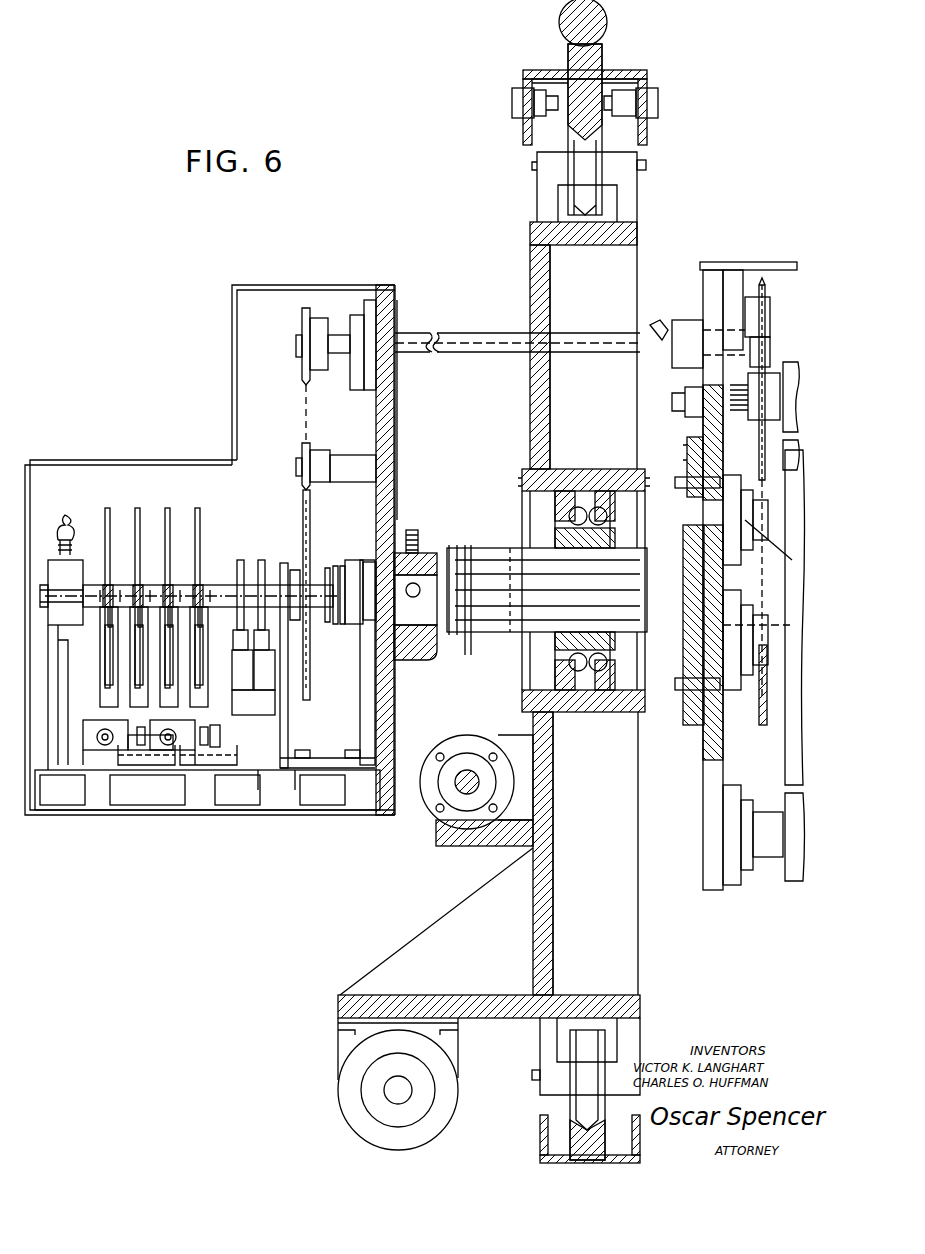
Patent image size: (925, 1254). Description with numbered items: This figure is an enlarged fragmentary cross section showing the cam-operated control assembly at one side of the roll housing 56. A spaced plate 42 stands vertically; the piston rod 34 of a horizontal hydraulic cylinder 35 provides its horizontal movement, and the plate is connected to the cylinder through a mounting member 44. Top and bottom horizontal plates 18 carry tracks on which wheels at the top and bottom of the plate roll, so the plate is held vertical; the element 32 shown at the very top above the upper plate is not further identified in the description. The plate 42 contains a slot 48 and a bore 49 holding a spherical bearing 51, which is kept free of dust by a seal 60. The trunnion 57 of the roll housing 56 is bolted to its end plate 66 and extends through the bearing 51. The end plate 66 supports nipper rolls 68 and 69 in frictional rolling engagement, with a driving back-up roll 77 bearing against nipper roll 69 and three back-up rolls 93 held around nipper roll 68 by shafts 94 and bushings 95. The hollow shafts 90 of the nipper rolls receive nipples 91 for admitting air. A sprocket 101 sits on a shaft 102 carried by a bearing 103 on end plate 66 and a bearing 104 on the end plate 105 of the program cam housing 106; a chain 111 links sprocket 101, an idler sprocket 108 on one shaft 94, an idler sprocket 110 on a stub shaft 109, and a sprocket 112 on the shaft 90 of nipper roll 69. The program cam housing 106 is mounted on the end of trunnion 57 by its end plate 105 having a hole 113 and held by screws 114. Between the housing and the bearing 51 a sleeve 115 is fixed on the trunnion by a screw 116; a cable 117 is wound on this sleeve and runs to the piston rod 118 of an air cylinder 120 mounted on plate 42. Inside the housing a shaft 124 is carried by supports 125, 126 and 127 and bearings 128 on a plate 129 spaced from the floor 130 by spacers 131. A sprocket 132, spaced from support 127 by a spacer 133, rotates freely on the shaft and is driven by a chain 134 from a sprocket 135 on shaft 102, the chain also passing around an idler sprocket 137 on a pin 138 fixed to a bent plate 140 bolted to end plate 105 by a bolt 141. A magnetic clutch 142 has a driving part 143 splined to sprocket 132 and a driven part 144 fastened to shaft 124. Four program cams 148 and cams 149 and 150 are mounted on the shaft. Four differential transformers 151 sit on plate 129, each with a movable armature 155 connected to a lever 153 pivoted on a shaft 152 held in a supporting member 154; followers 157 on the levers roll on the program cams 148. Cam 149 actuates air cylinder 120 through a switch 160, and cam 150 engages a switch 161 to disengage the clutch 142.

The top horizontal plate 18 is at (630, 72).
The ball 32 is at (607, 22).
The piston rod 34 is at (405, 1090).
The horizontal hydraulic cylinder 35 is at (443, 1105).
The spaced plate 42 is at (533, 258).
The mounting member 44 is at (458, 1043).
The slot 48 is at (548, 380).
The bore 49 is at (525, 502).
The spherical bearing 51 is at (607, 514).
The roll housing 56 is at (742, 262).
The trunnion 57 is at (690, 560).
The seal 60 is at (522, 524).
The end plate 66 is at (710, 284).
The nipper roll 68 is at (780, 548).
The nipper roll 69 is at (785, 757).
The driving back-up roll 77 is at (793, 880).
The shaft 90 is at (758, 550).
The nipple 91 is at (678, 490).
The back-up roll 93 is at (790, 362).
The shaft 94 is at (685, 403).
The bushing 95 is at (768, 398).
The sprocket 101 is at (772, 360).
The shaft 102 is at (656, 330).
The bearing 103 is at (680, 364).
The bearing 104 is at (355, 370).
The end plate 105 is at (394, 303).
The program cam housing 106 is at (350, 285).
The idler sprocket 108 is at (700, 472).
The stub shaft 109 is at (672, 318).
The idler sprocket 110 is at (780, 283).
The chain 111 is at (756, 624).
The sprocket 112 is at (765, 718).
The hole 113 is at (420, 625).
The screw 114 is at (412, 530).
The sleeve 115 is at (483, 556).
The screw 116 is at (432, 586).
The cable 117 is at (466, 655).
The piston rod 118 is at (468, 778).
The air cylinder 120 is at (440, 800).
The shaft 124 is at (210, 585).
The support 125 is at (360, 685).
The support 126 is at (55, 692).
The support 127 is at (288, 728).
The bearing 128 is at (75, 593).
The plate 129 is at (258, 800).
The floor 130 is at (295, 800).
The spacer 131 is at (42, 790).
The sprocket 132 is at (310, 515).
The spacer 133 is at (285, 560).
The chain 134 is at (308, 425).
The sprocket 135 is at (302, 368).
The idler sprocket 137 is at (300, 455).
The pin 138 is at (296, 468).
The bent plate 140 is at (340, 455).
The bolt 141 is at (368, 478).
The magnetic clutch 142 is at (346, 560).
The driving part 143 is at (330, 565).
The driven part 144 is at (350, 622).
The program cam 148 is at (198, 510).
The cam 149 is at (240, 558).
The cam 150 is at (262, 560).
The differential transformer 151 is at (87, 728).
The shaft 152 is at (220, 740).
The lever 153 is at (102, 690).
The supporting member 154 is at (112, 760).
The movable armature 155 is at (97, 737).
The follower 157 is at (198, 590).
The switch 160 is at (246, 670).
The switch 161 is at (258, 682).